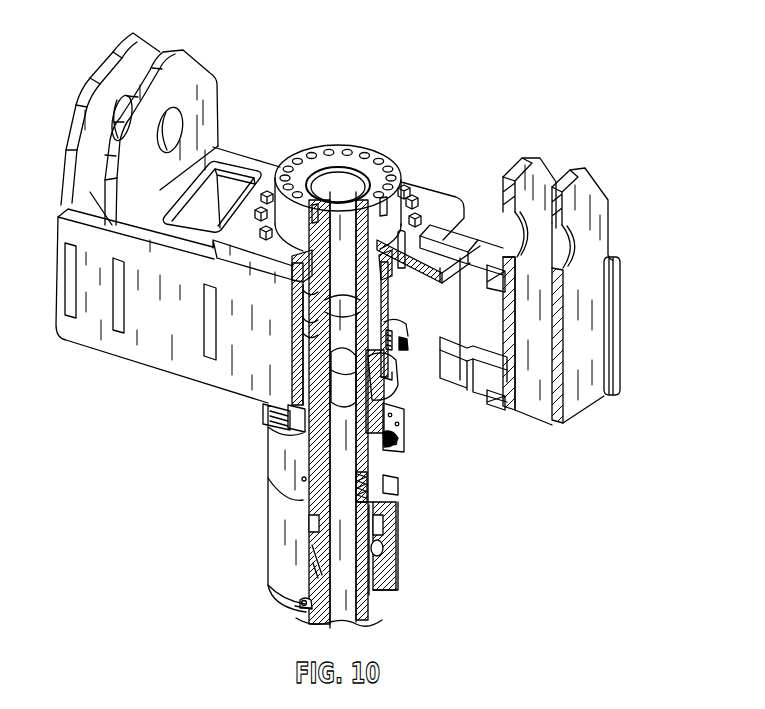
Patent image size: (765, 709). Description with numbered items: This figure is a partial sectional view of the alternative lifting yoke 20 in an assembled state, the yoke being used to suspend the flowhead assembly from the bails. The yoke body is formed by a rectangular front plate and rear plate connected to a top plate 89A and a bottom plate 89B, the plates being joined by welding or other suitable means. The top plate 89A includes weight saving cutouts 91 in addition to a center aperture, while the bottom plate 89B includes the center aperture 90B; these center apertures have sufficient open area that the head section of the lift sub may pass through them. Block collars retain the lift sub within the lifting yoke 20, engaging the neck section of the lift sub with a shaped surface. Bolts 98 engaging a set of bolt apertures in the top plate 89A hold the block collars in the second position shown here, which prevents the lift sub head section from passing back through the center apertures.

The lifting yoke 20 is at (522, 107).
The top plate 89A is at (215, 142).
The bottom plate 89B is at (449, 375).
The center aperture 90B is at (398, 333).
The weight saving cutouts 91 is at (227, 185).
The bolts 98 is at (405, 190).